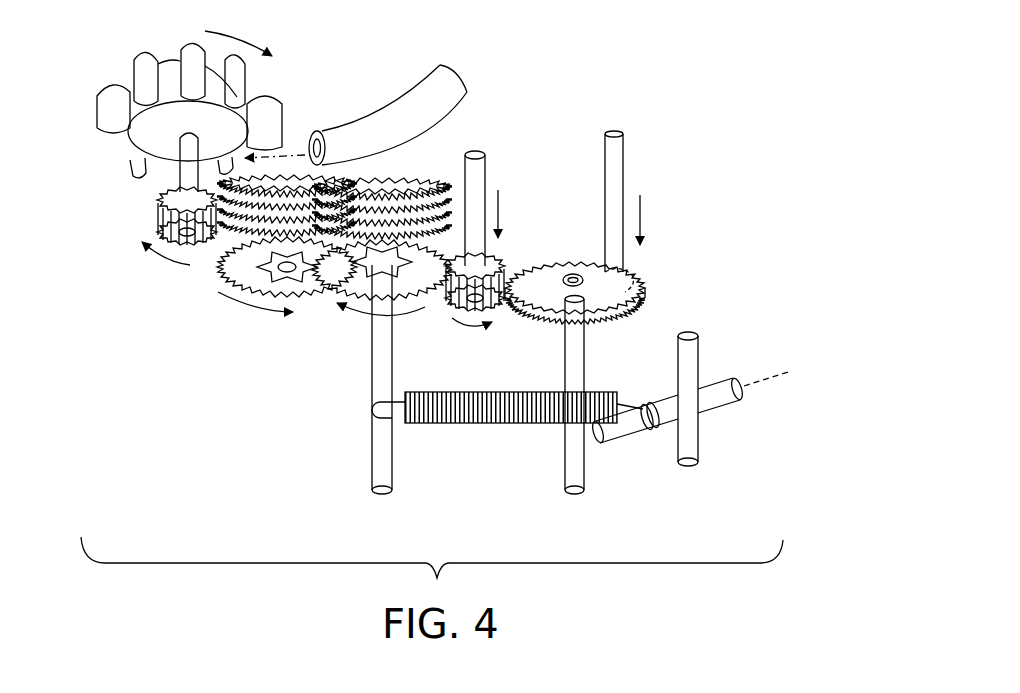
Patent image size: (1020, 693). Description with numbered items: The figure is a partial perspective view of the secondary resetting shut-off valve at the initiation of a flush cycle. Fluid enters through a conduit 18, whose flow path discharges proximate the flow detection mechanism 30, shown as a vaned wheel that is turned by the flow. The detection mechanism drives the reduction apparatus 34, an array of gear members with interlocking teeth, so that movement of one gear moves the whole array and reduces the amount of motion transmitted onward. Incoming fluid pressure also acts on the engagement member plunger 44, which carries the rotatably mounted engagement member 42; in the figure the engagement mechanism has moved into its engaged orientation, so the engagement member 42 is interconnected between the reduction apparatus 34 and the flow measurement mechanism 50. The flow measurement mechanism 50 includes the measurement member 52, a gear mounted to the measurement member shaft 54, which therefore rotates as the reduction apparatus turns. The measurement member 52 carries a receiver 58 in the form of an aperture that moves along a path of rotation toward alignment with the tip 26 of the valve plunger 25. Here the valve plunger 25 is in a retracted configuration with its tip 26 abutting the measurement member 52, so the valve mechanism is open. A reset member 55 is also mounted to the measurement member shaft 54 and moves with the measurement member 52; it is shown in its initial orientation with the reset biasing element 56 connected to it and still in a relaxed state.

The conduit 18 is at (360, 120).
The valve plunger 25 is at (625, 172).
The tip 26 is at (650, 292).
The flow detection mechanism 30 is at (112, 170).
The reduction apparatus 34 is at (228, 305).
The engagement member 42 is at (458, 313).
The engagement member plunger 44 is at (486, 172).
The flow measurement mechanism 50 is at (725, 352).
The measurement member 52 is at (635, 288).
The measurement member shaft 54 is at (586, 350).
The reset member 55 is at (737, 404).
The reset biasing element 56 is at (510, 425).
The receiver 58 is at (566, 288).